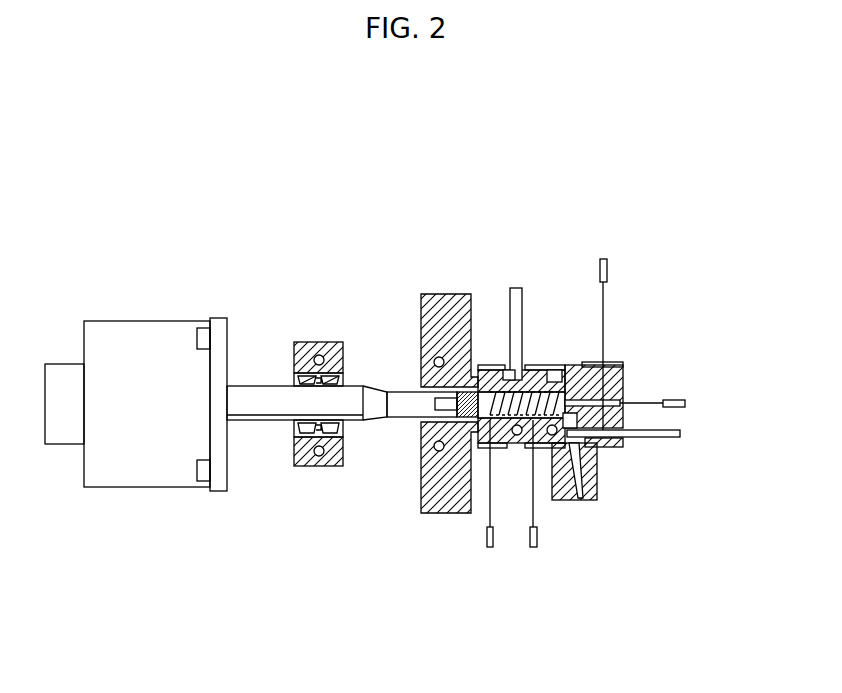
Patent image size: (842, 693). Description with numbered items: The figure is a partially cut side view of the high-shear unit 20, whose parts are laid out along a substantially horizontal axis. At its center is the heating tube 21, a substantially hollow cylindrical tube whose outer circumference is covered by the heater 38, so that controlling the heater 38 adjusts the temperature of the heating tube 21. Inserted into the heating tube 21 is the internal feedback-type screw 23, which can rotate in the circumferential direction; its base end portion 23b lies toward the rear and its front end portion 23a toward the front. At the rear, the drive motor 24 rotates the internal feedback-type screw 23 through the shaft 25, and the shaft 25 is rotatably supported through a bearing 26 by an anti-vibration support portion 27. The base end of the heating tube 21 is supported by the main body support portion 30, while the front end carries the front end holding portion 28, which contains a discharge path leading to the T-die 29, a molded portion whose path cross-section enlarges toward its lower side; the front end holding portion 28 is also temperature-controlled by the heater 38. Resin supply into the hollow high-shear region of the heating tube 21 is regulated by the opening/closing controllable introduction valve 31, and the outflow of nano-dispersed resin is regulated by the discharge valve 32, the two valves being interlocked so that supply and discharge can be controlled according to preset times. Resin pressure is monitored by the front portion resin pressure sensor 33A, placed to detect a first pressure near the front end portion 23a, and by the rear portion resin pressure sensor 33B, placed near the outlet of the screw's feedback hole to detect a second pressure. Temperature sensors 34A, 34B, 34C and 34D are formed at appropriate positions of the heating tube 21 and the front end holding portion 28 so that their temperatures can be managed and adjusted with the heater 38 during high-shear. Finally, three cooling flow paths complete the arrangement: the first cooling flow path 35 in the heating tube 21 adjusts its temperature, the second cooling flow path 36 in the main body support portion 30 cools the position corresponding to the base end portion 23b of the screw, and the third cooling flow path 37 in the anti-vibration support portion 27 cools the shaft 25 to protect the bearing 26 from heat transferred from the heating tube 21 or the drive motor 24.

The high-shear unit 20 is at (652, 210).
The heating tube 21 is at (513, 443).
The internal feedback-type screw 23 is at (536, 366).
The front end portion 23a is at (577, 407).
The base end portion 23b is at (421, 483).
The drive motor 24 is at (120, 321).
The shaft 25 is at (358, 382).
The bearing 26 is at (294, 378).
The anti-vibration support portion 27 is at (300, 342).
The front end holding portion 28 is at (623, 365).
The T-die 29 is at (581, 497).
The main body support portion 30 is at (421, 312).
The introduction valve 31 is at (522, 303).
The discharge valve 32 is at (662, 438).
The front portion resin pressure sensor 33A is at (583, 366).
The rear portion resin pressure sensor 33B is at (497, 363).
The temperature sensor 34A is at (605, 297).
The temperature sensor 34B is at (685, 404).
The temperature sensor 34C is at (528, 523).
The temperature sensor 34D is at (487, 517).
The first cooling flow path 35 is at (525, 448).
The second cooling flow path 36 is at (421, 454).
The third cooling flow path 37 is at (316, 466).
The heater 38 is at (482, 362).